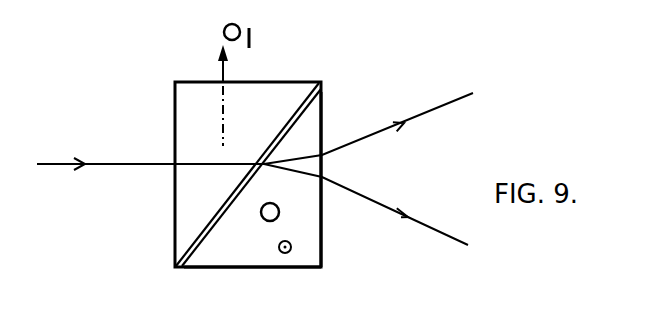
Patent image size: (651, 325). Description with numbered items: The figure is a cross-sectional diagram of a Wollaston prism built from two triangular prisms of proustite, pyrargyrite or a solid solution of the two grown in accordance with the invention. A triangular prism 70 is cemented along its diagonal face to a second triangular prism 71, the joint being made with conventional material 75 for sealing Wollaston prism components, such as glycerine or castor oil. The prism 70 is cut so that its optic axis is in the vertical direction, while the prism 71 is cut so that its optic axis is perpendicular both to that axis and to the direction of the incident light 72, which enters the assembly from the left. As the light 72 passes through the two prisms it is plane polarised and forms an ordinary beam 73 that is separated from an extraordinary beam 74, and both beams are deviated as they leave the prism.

The triangular prism 70 is at (185, 123).
The triangular prism 71 is at (255, 253).
The incident light 72 is at (127, 168).
The ordinary beam 73 is at (452, 105).
The extraordinary beam 74 is at (452, 238).
The cementing material 75 is at (205, 238).